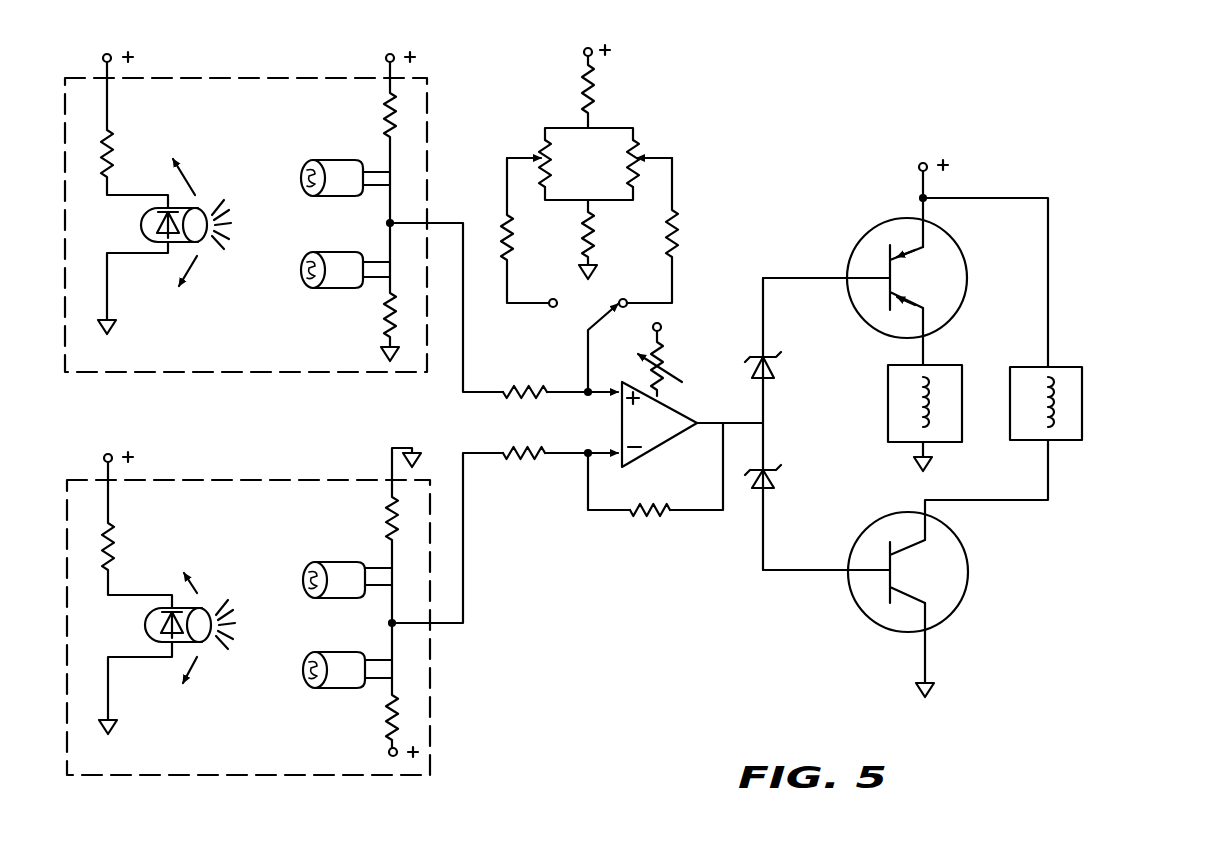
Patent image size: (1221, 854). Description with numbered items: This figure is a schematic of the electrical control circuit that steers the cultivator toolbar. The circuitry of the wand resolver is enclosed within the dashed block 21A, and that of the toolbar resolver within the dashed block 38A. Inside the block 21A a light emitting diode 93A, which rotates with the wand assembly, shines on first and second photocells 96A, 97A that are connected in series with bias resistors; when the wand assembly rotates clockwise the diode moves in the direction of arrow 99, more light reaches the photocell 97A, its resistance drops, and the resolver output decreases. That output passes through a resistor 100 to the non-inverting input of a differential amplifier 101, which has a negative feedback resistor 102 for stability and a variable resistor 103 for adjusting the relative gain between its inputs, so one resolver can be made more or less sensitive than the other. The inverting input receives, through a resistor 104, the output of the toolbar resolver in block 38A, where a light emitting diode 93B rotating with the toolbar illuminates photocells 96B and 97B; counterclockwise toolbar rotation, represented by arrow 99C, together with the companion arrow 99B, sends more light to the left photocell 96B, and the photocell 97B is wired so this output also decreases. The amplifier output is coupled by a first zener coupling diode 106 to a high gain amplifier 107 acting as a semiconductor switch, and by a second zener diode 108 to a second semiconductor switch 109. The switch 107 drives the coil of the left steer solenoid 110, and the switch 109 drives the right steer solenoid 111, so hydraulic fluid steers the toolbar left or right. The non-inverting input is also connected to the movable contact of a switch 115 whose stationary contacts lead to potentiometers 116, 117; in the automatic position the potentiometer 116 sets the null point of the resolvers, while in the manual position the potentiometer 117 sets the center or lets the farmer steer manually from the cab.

The dashed block 21A is at (175, 78).
The dashed block 38A is at (182, 480).
The light emitting diode 93A is at (133, 212).
The light emitting diode 93B is at (136, 616).
The first photocell 96A is at (343, 128).
The second photocell 97A is at (340, 288).
The first photocell 96B is at (357, 530).
The second photocell 97B is at (343, 688).
The arrow 99 is at (195, 260).
The light beam 99B is at (205, 662).
The arrow 99C is at (233, 555).
The resistor 100 is at (550, 371).
The differential amplifier 101 is at (674, 406).
The negative feedback resistor 102 is at (663, 514).
The variable resistor 103 is at (671, 352).
The resistor 104 is at (510, 468).
The first zener coupling diode 106 is at (767, 356).
The high gain amplifier 107 is at (883, 203).
The second zener diode 108 is at (770, 490).
The second semiconductor switch 109 is at (969, 547).
The left steer solenoid 110 is at (947, 364).
The right steer solenoid 111 is at (1068, 443).
The switch 115 is at (551, 314).
The potentiometer 116 is at (648, 144).
The potentiometer 117 is at (533, 146).